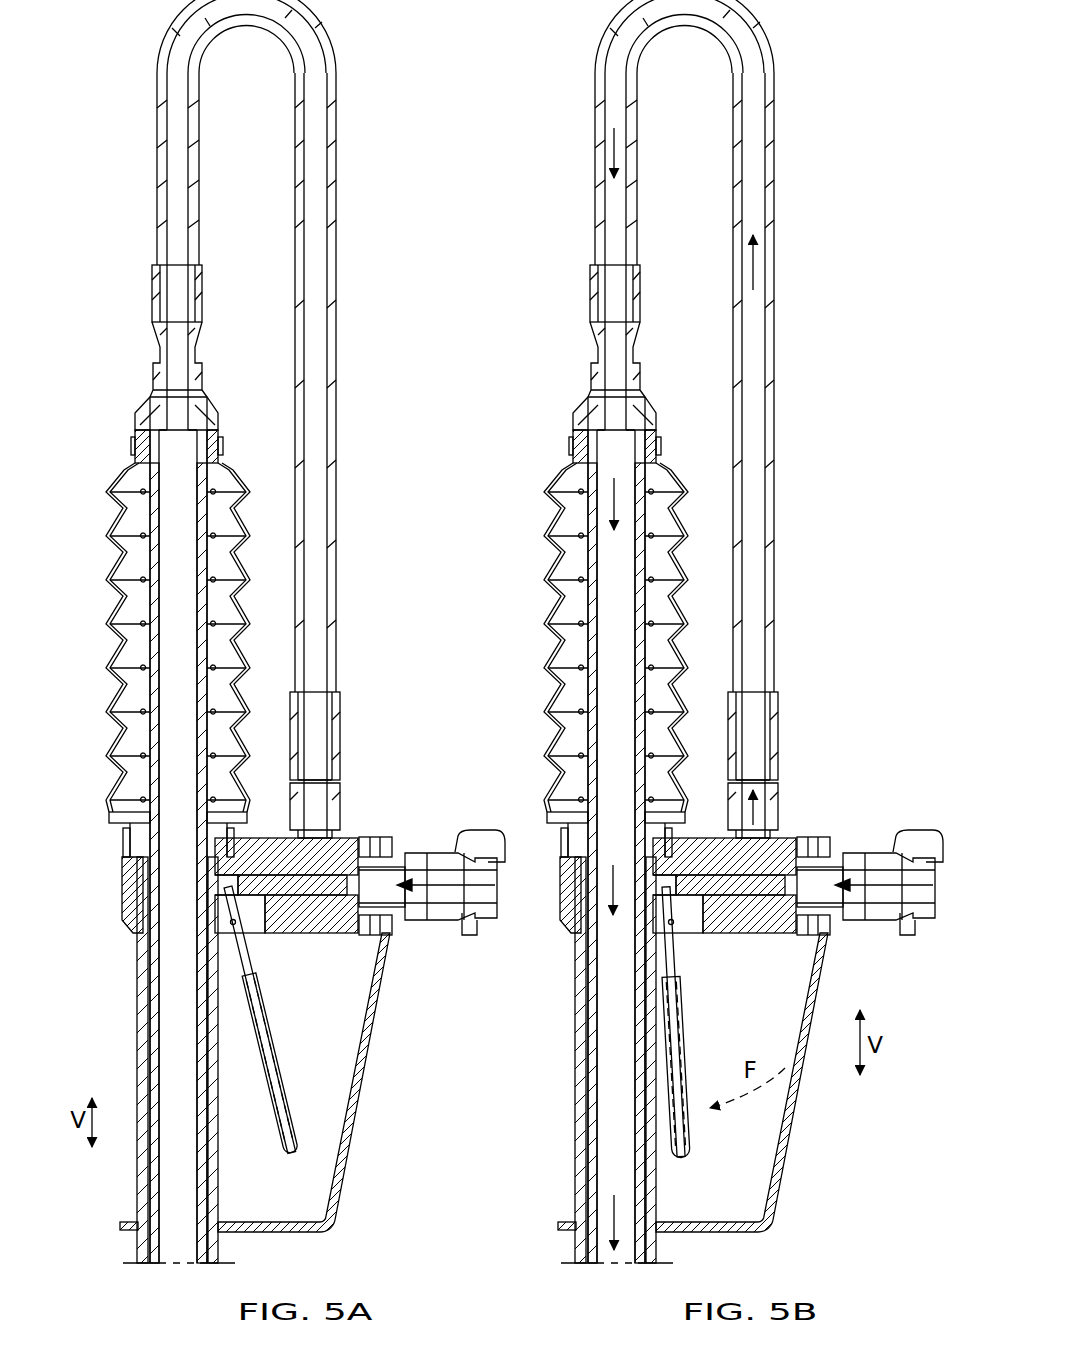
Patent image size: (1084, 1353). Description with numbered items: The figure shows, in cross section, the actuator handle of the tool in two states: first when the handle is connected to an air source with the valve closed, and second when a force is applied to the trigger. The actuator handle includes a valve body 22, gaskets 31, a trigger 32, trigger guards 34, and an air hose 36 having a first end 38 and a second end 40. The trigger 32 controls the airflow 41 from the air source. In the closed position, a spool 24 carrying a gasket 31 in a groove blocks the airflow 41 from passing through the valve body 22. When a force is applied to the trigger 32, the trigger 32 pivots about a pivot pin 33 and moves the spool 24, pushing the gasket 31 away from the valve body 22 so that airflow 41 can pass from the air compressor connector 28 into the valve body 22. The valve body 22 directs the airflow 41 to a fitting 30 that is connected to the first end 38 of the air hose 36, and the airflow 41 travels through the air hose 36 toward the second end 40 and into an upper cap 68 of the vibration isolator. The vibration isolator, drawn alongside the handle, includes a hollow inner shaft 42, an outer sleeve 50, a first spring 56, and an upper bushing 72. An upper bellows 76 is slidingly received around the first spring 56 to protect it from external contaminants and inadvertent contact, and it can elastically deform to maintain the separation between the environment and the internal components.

In FIG. 5A, the valve body 22 is at (350, 855).
In FIG. 5B, the valve body 22 is at (741, 860).
In FIG. 5A, the spool 24 is at (322, 905).
In FIG. 5B, the spool 24 is at (730, 925).
In FIG. 5A, the air compressor connector 28 is at (445, 933).
In FIG. 5B, the air compressor connector 28 is at (870, 859).
In FIG. 5A, the fitting 30 is at (338, 790).
In FIG. 5B, the fitting 30 is at (770, 765).
In FIG. 5A, the gaskets 31 is at (385, 848).
In FIG. 5B, the gaskets 31 is at (835, 873).
In FIG. 5A, the trigger 32 is at (240, 968).
In FIG. 5B, the trigger 32 is at (711, 1022).
In FIG. 5A, the pivot pin 33 is at (236, 926).
In FIG. 5B, the pivot pin 33 is at (708, 946).
In FIG. 5A, the trigger guards 34 is at (275, 1140).
In FIG. 5B, the trigger guards 34 is at (755, 1082).
In FIG. 5A, the air hose 36 is at (333, 190).
In FIG. 5B, the air hose 36 is at (717, 215).
In FIG. 5A, the first end 38 is at (338, 660).
In FIG. 5B, the first end 38 is at (786, 455).
In FIG. 5A, the second end 40 is at (160, 228).
In FIG. 5B, the second end 40 is at (578, 313).
In FIG. 5A, the airflow 41 is at (497, 885).
In FIG. 5B, the airflow 41 is at (718, 689).
In FIG. 5A, the hollow inner shaft 42 is at (140, 470).
In FIG. 5B, the hollow inner shaft 42 is at (644, 830).
In FIG. 5A, the outer sleeve 50 is at (140, 1010).
In FIG. 5B, the outer sleeve 50 is at (589, 1060).
In FIG. 5A, the first spring 56 is at (130, 684).
In FIG. 5B, the first spring 56 is at (586, 645).
In FIG. 5A, the upper cap 68 is at (150, 410).
In FIG. 5B, the upper cap 68 is at (577, 430).
In FIG. 5A, the upper bushing 72 is at (128, 840).
In FIG. 5B, the upper bushing 72 is at (587, 820).
In FIG. 5A, the upper bellows 76 is at (132, 600).
In FIG. 5B, the upper bellows 76 is at (581, 637).